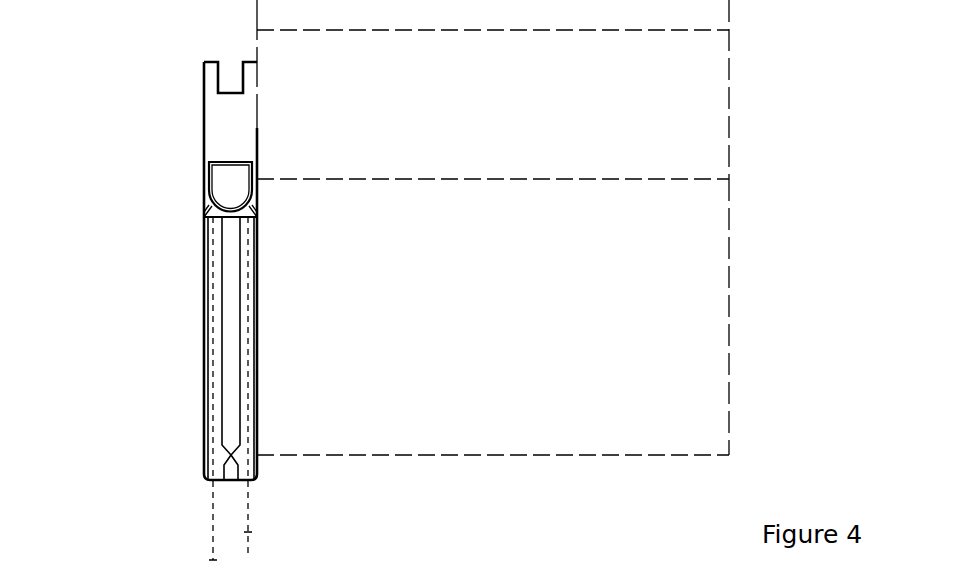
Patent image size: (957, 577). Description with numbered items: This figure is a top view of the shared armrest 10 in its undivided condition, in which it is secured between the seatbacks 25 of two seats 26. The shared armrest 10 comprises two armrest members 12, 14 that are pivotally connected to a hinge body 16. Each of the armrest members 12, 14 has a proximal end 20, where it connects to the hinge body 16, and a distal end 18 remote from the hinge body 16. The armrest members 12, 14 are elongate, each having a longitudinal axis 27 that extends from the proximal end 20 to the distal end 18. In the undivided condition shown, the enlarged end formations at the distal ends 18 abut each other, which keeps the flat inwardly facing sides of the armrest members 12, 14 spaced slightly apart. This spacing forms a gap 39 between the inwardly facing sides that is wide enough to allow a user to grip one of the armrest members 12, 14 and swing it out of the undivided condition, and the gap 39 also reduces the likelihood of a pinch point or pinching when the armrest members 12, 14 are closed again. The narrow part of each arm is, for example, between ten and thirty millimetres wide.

The shared armrest 10 is at (138, 348).
The armrest member 12 is at (204, 468).
The armrest member 14 is at (256, 481).
The hinge body 16 is at (217, 127).
The distal end 18 is at (213, 500).
The proximal end 20 is at (197, 210).
The seatback 25 is at (713, 78).
The seat 26 is at (707, 355).
The longitudinal axis 27 is at (213, 560).
The gap 39 is at (223, 344).